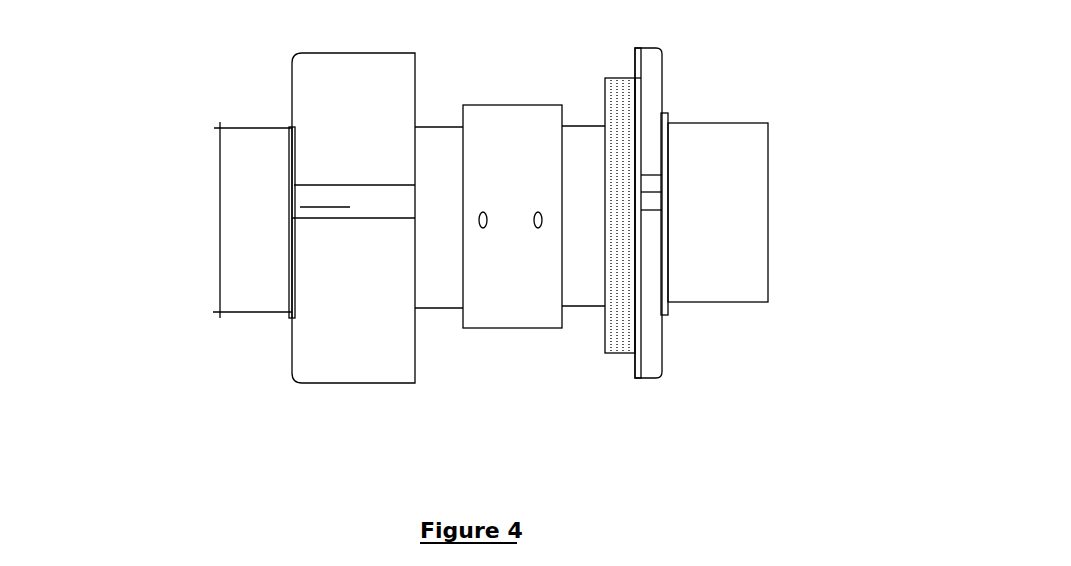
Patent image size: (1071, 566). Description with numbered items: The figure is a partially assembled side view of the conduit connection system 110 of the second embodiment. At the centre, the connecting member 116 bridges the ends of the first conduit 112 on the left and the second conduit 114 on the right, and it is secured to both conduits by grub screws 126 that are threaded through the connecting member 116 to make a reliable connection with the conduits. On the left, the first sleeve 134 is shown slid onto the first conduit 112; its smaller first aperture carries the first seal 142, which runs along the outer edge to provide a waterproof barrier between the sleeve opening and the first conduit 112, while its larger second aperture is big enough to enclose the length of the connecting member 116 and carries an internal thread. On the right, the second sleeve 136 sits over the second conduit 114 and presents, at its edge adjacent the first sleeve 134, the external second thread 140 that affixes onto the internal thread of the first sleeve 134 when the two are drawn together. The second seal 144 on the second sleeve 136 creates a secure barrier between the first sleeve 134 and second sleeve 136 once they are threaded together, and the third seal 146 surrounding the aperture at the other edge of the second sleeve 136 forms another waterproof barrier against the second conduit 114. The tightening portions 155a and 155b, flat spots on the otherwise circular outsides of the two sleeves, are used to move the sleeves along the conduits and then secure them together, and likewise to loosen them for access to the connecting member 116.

The conduit connection system 110 is at (225, 403).
The first conduit 112 is at (247, 167).
The second conduit 114 is at (703, 157).
The connecting member 116 is at (573, 180).
The grub screws 126 is at (483, 227).
The first sleeve 134 is at (325, 107).
The second sleeve 136 is at (648, 58).
The second thread 140 is at (622, 108).
The first seal 142 is at (290, 128).
The second seal 144 is at (640, 80).
The third seal 146 is at (668, 120).
The tightening portion 155a is at (350, 207).
The tightening portion 155b is at (650, 192).